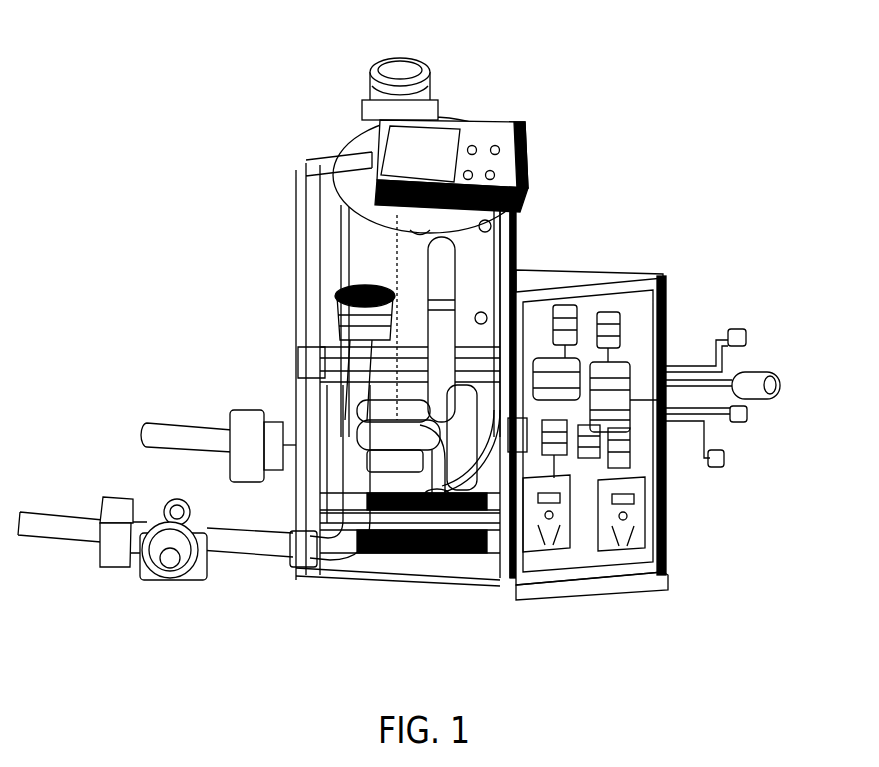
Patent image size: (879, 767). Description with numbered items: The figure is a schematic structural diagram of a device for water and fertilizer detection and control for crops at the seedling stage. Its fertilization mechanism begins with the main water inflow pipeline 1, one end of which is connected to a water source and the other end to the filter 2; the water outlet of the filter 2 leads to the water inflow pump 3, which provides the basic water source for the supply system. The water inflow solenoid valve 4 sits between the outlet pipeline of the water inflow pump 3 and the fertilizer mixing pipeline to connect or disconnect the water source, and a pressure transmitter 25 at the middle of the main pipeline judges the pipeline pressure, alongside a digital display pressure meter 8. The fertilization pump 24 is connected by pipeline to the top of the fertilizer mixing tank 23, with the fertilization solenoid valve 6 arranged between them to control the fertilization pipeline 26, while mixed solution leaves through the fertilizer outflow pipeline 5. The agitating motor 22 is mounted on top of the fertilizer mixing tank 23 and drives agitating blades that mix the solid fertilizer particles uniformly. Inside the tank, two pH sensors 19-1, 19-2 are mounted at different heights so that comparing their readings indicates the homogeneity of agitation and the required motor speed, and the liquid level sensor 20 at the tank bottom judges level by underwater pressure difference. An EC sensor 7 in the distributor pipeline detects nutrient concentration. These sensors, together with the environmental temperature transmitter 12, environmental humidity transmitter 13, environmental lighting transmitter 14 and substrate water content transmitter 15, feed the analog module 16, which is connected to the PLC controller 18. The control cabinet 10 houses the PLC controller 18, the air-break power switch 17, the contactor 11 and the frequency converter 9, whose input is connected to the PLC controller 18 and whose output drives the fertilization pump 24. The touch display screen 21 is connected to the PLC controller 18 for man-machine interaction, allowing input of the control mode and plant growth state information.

The main water inflow pipeline 1 is at (23, 538).
The filter 2 is at (115, 567).
The water inflow pump 3 is at (167, 580).
The water inflow solenoid valve 4 is at (332, 485).
The fertilizer outflow pipeline 5 is at (393, 470).
The fertilization solenoid valve 6 is at (423, 510).
The EC sensor 7 is at (448, 500).
The digital display pressure meter 8 is at (590, 455).
The frequency converter 9 is at (607, 550).
The control cabinet 10 is at (667, 573).
The contactor 11 is at (627, 455).
The environmental temperature transmitter 12 is at (725, 455).
The environmental humidity transmitter 13 is at (749, 416).
The environmental lighting transmitter 14 is at (777, 382).
The substrate water content transmitter 15 is at (742, 332).
The analog module 16 is at (643, 374).
The air-break power switch 17 is at (638, 398).
The PLC controller 18 is at (600, 316).
The pH sensor 19-1 is at (482, 316).
The pH sensor 19-2 is at (489, 224).
The liquid level sensor 20 is at (460, 407).
The touch display screen 21 is at (455, 130).
The agitating motor 22 is at (400, 72).
The fertilizer mixing tank 23 is at (353, 233).
The fertilization pump 24 is at (345, 293).
The pressure transmitter 25 is at (280, 420).
The fertilization pipeline 26 is at (140, 440).